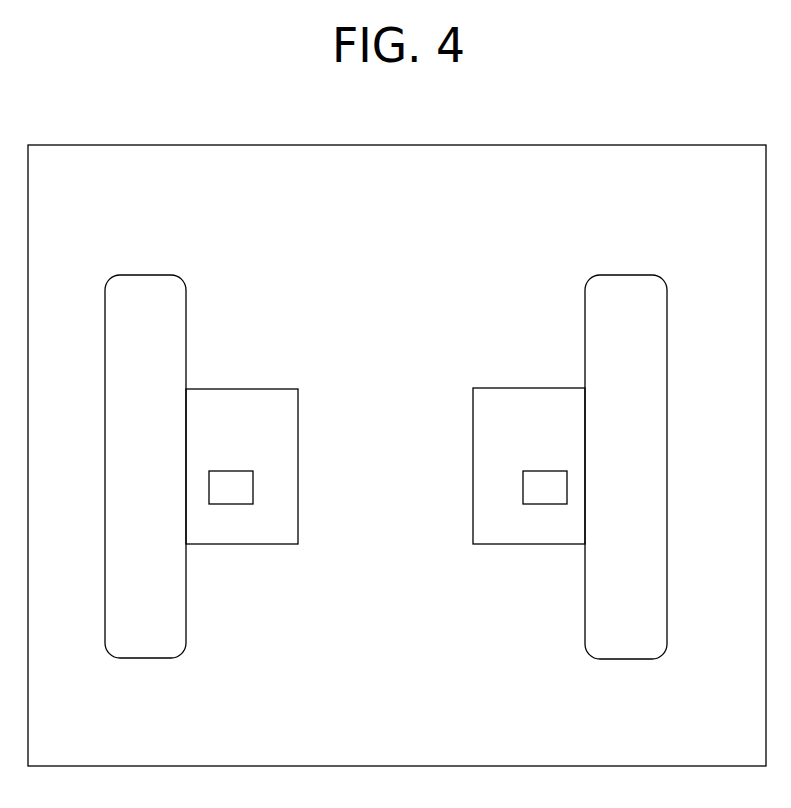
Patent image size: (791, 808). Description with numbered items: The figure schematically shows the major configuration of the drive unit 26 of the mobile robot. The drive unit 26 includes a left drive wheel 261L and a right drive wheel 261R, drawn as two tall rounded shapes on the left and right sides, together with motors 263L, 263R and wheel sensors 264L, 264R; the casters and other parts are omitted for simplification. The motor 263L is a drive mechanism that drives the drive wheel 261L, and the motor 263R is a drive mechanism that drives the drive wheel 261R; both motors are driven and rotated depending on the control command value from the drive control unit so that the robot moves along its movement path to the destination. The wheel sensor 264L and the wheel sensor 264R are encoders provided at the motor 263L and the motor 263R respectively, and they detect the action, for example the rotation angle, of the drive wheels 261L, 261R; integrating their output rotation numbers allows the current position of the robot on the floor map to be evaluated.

The drive unit 26 is at (541, 273).
The drive wheel 261L is at (135, 273).
The drive wheel 261R is at (642, 660).
The motor 263L is at (227, 388).
The motor 263R is at (530, 387).
The wheel sensor 264L is at (226, 470).
The wheel sensor 264R is at (542, 470).